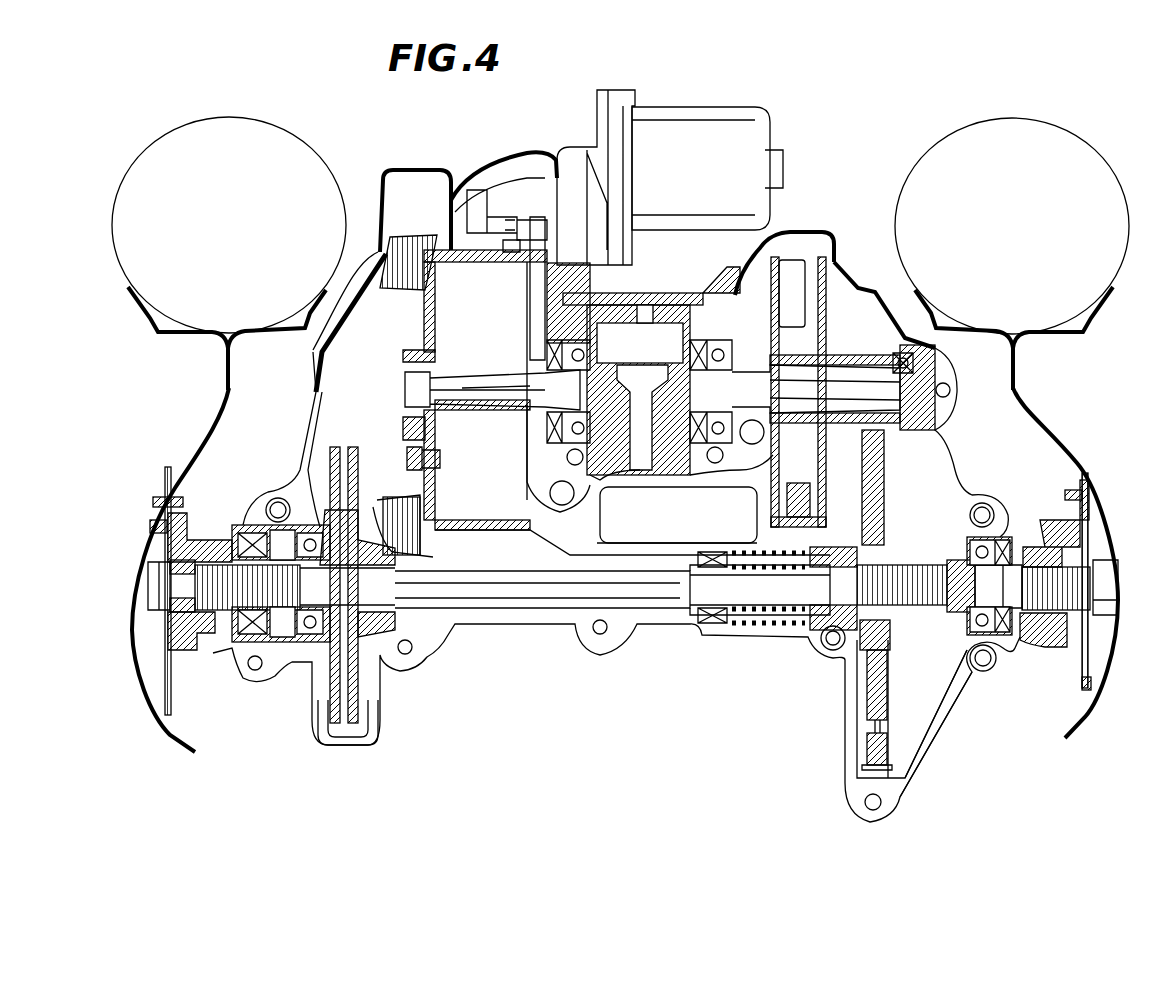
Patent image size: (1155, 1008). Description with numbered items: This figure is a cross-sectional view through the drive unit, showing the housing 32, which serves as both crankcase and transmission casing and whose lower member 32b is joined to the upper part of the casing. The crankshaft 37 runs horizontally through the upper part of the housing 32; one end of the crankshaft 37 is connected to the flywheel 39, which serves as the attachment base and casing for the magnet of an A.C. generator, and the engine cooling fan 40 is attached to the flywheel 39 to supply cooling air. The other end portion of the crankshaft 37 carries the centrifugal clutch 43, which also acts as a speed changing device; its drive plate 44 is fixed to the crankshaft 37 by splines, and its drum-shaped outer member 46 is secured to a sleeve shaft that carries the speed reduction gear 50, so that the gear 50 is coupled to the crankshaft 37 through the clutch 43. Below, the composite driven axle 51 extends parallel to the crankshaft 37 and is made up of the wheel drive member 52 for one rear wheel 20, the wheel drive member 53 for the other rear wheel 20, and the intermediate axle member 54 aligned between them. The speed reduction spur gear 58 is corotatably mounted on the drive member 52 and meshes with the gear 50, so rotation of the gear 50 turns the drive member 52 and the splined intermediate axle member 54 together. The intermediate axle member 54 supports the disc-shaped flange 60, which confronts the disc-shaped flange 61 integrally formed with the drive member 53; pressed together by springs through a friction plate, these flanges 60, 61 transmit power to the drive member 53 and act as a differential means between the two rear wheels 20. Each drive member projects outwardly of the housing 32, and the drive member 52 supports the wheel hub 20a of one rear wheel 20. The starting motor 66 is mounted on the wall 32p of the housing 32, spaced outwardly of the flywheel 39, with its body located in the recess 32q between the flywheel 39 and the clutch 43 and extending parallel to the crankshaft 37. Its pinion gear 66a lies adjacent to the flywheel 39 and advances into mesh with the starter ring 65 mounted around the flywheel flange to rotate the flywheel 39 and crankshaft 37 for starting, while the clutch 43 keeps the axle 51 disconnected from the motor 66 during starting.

The rear wheel 20 is at (280, 124).
The wheel hub 20a is at (190, 445).
The housing 32 is at (953, 436).
The lower member 32b is at (947, 700).
The wall 32p is at (470, 172).
The recess 32q is at (668, 295).
The crankshaft 37 is at (405, 385).
The flywheel 39 is at (422, 307).
The engine cooling fan 40 is at (405, 242).
The centrifugal clutch 43 is at (833, 238).
The drive plate 44 is at (775, 475).
The outer member 46 is at (826, 342).
The speed reduction gear 50 is at (855, 380).
The composite driven axle 51 is at (503, 601).
The wheel drive member 52 is at (1015, 620).
The wheel drive member 53 is at (205, 615).
The intermediate axle member 54 is at (647, 590).
The speed reduction spur gear 58 is at (868, 745).
The disc-shaped flange 60 is at (363, 707).
The disc-shaped flange 61 is at (330, 707).
The starter ring 65 is at (505, 246).
The starting motor 66 is at (719, 101).
The pinion gear 66a is at (530, 260).